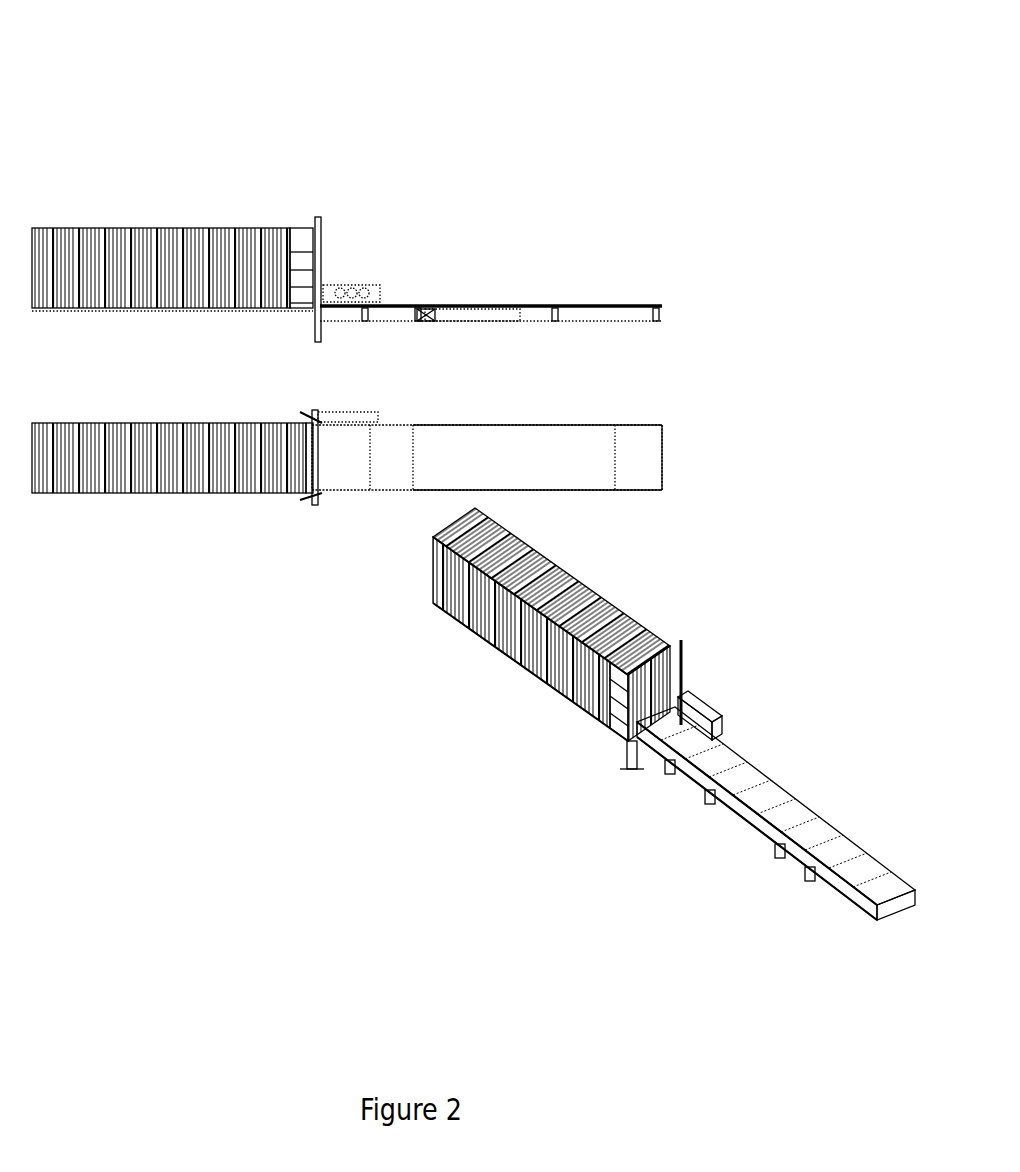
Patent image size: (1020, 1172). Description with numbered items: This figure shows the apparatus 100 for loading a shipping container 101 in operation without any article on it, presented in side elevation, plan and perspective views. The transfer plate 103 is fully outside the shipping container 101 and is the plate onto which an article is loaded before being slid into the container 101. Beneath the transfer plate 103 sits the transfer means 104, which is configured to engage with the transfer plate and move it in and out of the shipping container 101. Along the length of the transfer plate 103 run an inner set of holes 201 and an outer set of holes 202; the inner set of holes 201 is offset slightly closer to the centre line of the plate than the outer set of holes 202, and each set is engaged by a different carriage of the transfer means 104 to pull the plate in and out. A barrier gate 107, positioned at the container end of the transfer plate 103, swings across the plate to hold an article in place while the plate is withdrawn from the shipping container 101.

The apparatus 100 is at (670, 168).
The shipping container 101 is at (158, 240).
The transfer plate 103 is at (742, 780).
The transfer means 104 is at (420, 311).
The barrier gate 107 is at (360, 270).
The inner set of holes 201 is at (550, 477).
The outer set of holes 202 is at (655, 487).